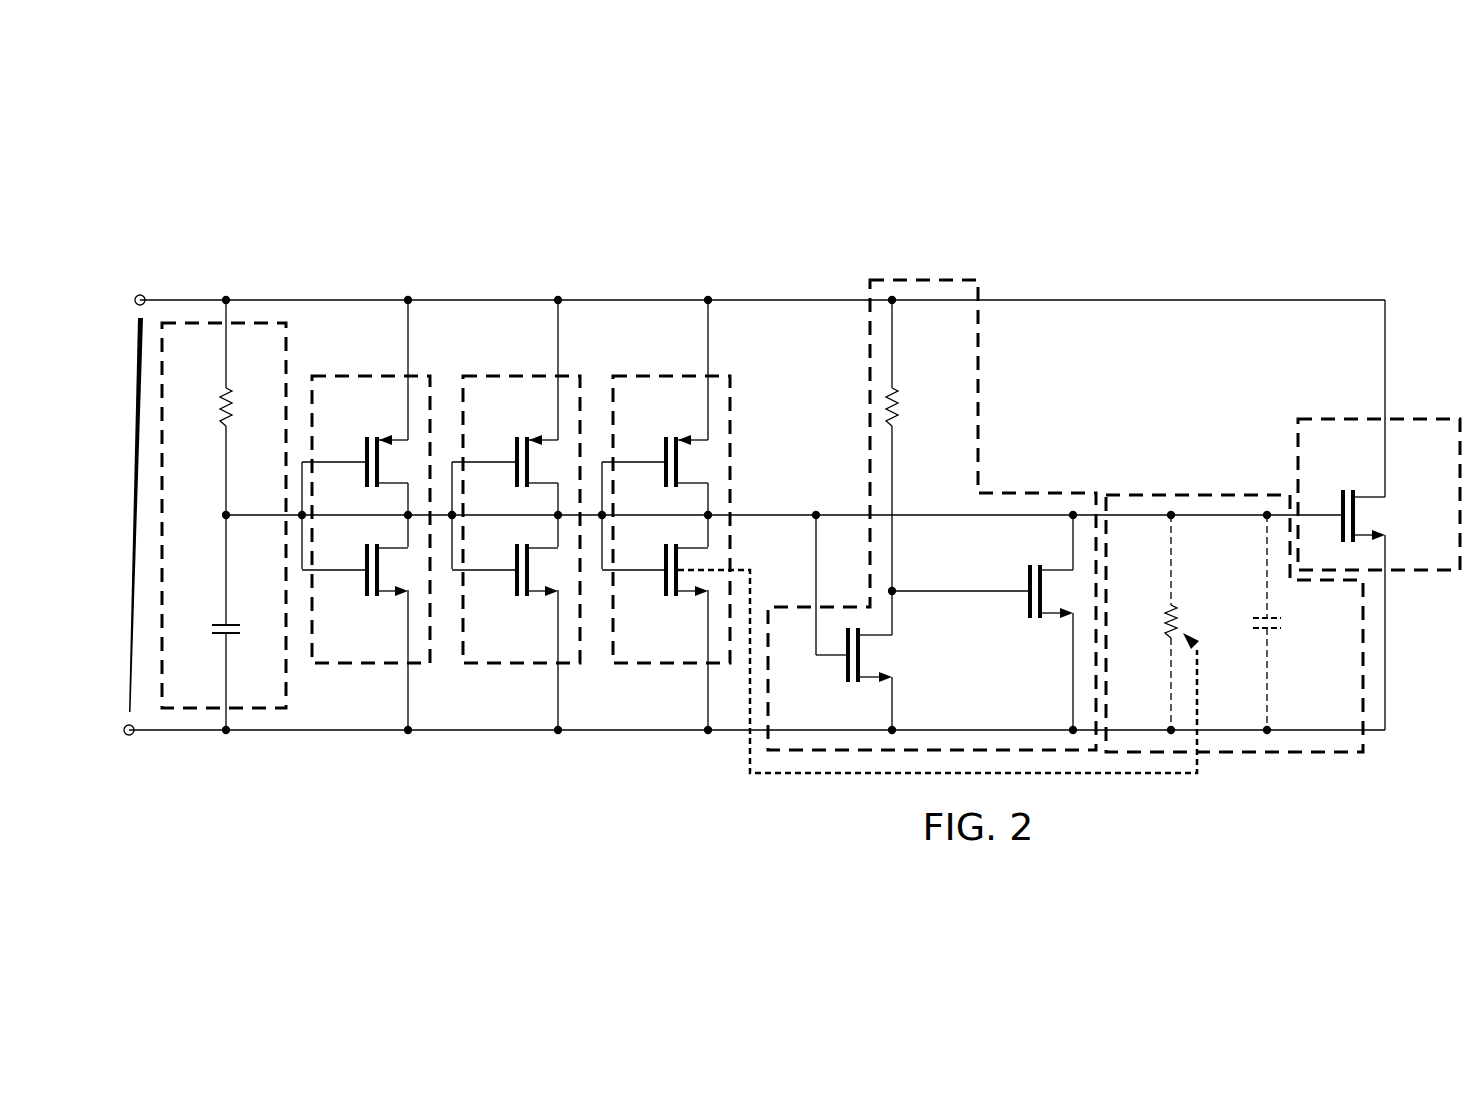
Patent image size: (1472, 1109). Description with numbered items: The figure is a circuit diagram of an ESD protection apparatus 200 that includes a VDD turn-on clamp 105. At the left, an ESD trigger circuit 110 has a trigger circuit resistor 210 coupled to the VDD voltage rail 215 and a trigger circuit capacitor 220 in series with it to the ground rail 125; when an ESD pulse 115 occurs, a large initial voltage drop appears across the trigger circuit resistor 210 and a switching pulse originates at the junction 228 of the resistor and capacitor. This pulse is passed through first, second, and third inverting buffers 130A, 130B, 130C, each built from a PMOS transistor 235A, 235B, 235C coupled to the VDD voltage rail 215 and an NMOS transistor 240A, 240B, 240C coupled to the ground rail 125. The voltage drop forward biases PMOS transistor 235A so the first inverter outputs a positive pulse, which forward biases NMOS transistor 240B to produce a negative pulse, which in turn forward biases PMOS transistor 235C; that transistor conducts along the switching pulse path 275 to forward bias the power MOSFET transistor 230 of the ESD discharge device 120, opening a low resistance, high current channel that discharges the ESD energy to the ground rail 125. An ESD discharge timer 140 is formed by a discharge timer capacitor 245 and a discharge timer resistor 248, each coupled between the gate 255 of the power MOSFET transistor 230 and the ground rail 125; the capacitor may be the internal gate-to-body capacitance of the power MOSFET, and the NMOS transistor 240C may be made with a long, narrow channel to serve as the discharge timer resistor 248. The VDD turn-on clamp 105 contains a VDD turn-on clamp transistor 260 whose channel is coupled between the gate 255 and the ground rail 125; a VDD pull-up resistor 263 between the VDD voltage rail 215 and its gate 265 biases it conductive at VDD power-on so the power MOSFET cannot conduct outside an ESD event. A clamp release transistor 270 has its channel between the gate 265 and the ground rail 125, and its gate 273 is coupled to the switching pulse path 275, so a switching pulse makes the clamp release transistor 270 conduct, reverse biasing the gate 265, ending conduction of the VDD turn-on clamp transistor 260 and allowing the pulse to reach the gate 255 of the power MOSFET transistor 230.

The ESD protection apparatus 200 is at (1036, 274).
The VDD voltage rail 215 is at (642, 300).
The ground rail 125 is at (642, 731).
The ESD pulse 115 is at (139, 339).
The ESD trigger circuit 110 is at (193, 716).
The trigger circuit resistor 210 is at (220, 402).
The trigger circuit capacitor 220 is at (211, 629).
The junction 228 is at (232, 506).
The switching pulse path 275 is at (783, 513).
The first inverting buffer 130A is at (366, 369).
The second inverting buffer 130B is at (516, 369).
The third inverting buffer 130C is at (641, 369).
The PMOS transistor 235A is at (364, 450).
The PMOS transistor 235B is at (514, 450).
The PMOS transistor 235C is at (664, 450).
The NMOS transistor 240A is at (364, 580).
The NMOS transistor 240B is at (514, 580).
The NMOS transistor 240C is at (666, 580).
The VDD turn-on clamp 105 is at (1044, 486).
The VDD pull-up resistor 263 is at (899, 413).
The gate of clamp release transistor 273 is at (846, 666).
The clamp release transistor 270 is at (893, 663).
The gate of VDD turn-on clamp transistor 265 is at (1028, 581).
The VDD turn-on clamp transistor 260 is at (1082, 588).
The ESD discharge timer 140 is at (1219, 486).
The discharge timer resistor 248 is at (1163, 619).
The discharge timer capacitor 245 is at (1253, 619).
The ESD discharge device 120 is at (1414, 410).
The gate of power MOSFET transistor 255 is at (1341, 491).
The power MOSFET transistor 230 is at (1399, 504).